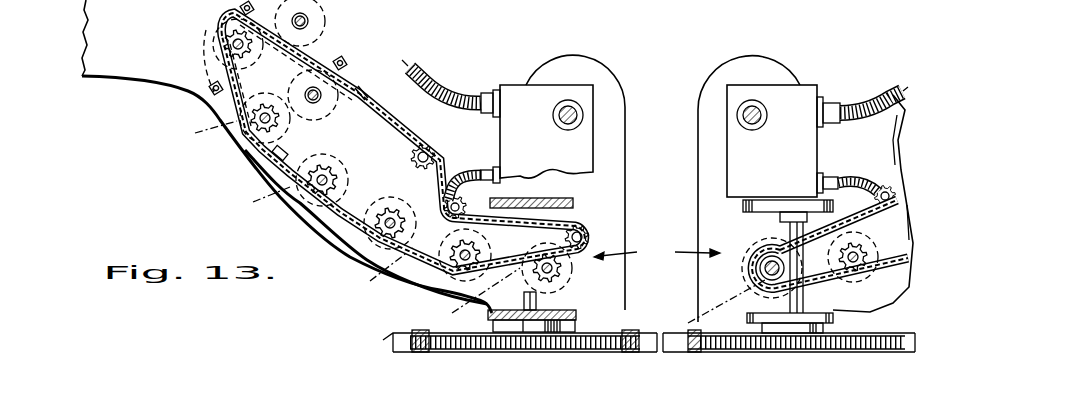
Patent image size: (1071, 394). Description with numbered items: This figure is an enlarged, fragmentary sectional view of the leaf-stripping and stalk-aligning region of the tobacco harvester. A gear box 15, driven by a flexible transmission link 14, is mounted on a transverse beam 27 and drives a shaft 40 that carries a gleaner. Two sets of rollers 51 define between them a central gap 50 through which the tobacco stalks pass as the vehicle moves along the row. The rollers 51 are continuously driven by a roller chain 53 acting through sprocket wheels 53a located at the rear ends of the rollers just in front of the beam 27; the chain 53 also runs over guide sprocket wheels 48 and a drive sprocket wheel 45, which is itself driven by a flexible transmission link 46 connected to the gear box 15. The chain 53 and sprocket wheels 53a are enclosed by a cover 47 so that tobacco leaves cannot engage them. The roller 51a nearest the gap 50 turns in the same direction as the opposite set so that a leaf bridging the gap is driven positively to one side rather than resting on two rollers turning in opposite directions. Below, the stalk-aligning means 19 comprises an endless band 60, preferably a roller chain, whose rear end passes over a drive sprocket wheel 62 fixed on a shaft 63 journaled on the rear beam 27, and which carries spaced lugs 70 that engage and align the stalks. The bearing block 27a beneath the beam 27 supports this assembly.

The flexible transmission link 14 is at (423, 71).
The gear box 15 is at (522, 100).
The stalk-aligning means 19 is at (638, 361).
The transverse beam 27 is at (577, 62).
The bearing block 27a is at (518, 347).
The shaft 40 is at (580, 113).
The drive sprocket wheel 45 is at (440, 193).
The flexible transmission link 46 is at (457, 180).
The cover 47 is at (260, 160).
The guide sprocket wheel 48 is at (418, 157).
The central gap 50 is at (657, 255).
The roller 51 is at (287, 194).
The roller nearest the central gap 51a is at (591, 298).
The roller chain 53 is at (410, 99).
The sprocket wheel 53a is at (323, 217).
The endless band 60 is at (631, 330).
The drive sprocket wheel 62 is at (470, 343).
The shaft 63 is at (537, 300).
The lug 70 is at (392, 340).